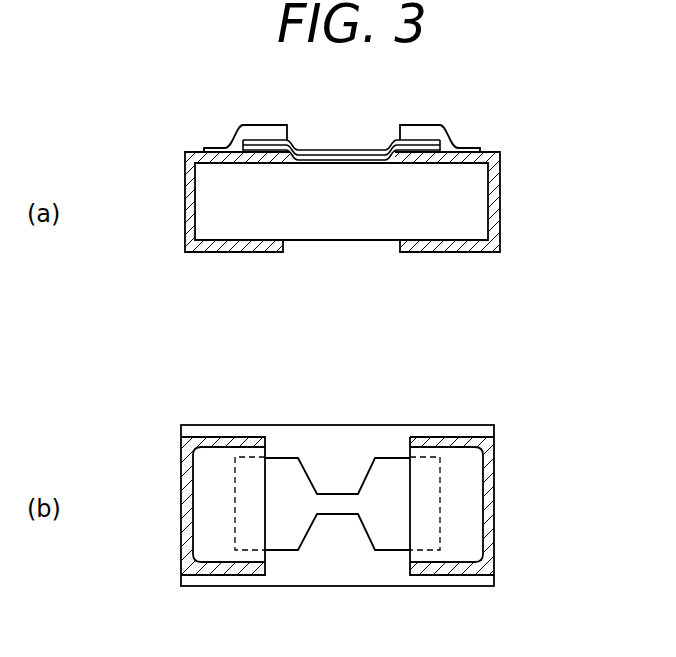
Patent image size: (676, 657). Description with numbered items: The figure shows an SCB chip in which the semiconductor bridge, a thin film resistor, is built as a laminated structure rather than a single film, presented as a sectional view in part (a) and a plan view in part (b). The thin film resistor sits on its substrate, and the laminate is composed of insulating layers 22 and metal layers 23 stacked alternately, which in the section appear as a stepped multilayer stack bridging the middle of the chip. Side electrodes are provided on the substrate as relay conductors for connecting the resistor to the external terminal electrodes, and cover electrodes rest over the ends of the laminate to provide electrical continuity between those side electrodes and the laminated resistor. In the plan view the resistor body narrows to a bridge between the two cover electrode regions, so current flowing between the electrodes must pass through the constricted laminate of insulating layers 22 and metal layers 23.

The insulating layers 22 is at (268, 165).
The metal layers 23 is at (270, 140).